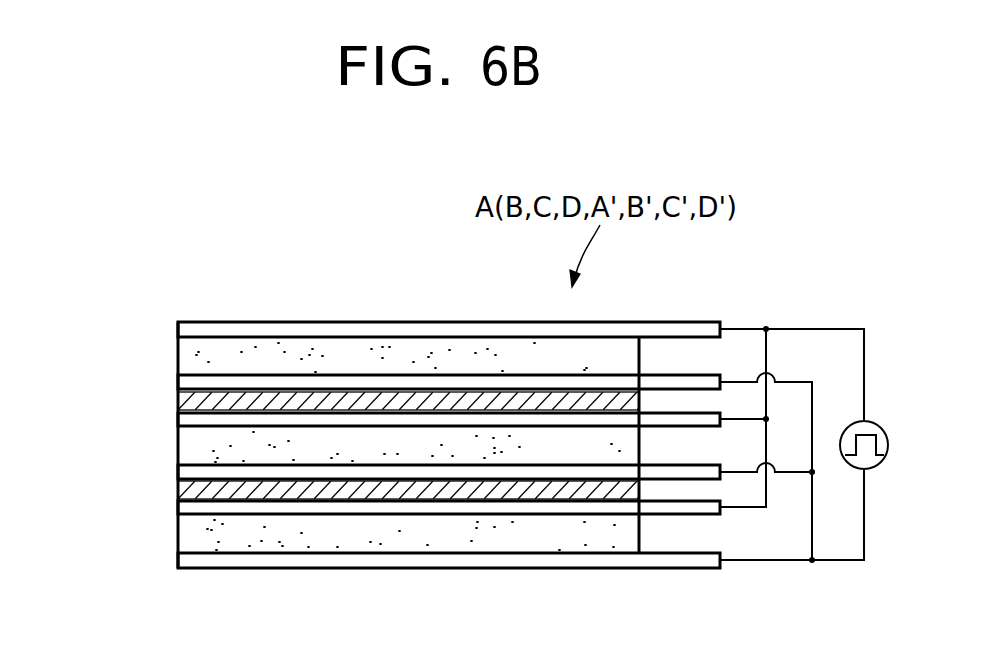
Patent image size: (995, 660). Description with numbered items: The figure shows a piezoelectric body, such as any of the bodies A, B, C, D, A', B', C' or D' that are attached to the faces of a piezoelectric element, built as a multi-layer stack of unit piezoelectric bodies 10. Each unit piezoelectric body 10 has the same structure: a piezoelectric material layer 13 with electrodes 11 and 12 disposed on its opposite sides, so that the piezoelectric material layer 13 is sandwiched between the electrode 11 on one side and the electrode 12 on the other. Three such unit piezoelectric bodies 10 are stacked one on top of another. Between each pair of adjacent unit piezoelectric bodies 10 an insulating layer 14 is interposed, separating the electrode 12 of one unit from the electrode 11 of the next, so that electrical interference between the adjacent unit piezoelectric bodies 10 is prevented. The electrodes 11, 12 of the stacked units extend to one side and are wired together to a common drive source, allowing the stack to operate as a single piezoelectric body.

The unit piezoelectric body 10 is at (105, 302).
The electrode 11 is at (178, 324).
The electrode 12 is at (178, 383).
The piezoelectric material layer 13 is at (178, 353).
The insulating layer 14 is at (178, 398).